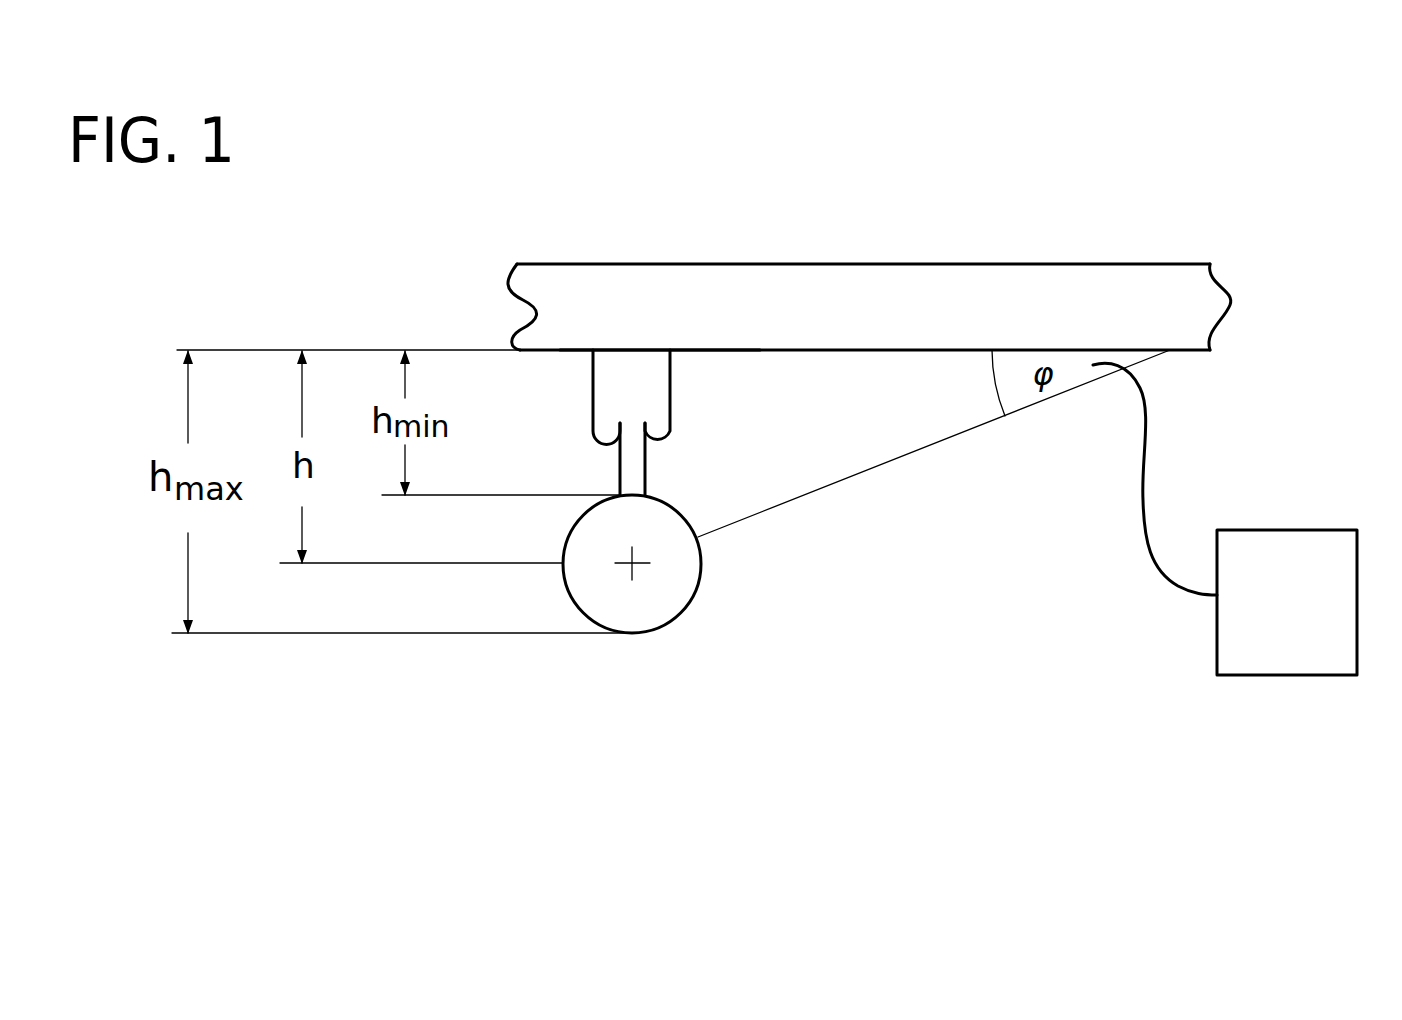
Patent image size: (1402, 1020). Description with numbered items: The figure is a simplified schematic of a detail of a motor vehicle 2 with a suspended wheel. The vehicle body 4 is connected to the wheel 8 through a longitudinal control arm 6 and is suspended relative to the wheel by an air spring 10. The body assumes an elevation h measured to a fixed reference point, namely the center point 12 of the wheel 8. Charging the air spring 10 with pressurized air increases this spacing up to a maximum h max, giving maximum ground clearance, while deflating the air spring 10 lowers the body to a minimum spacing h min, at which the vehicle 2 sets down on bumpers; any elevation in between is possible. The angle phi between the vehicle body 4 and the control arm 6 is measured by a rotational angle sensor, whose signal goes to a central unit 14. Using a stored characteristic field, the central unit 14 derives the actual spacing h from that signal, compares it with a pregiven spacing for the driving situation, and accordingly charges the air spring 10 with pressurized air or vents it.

The motor vehicle 2 is at (882, 293).
The vehicle body 4 is at (640, 298).
The longitudinal control arm 6 is at (908, 454).
The wheel 8 is at (662, 603).
The air spring 10 is at (612, 393).
The center point 12 is at (632, 563).
The central unit 14 is at (1298, 610).